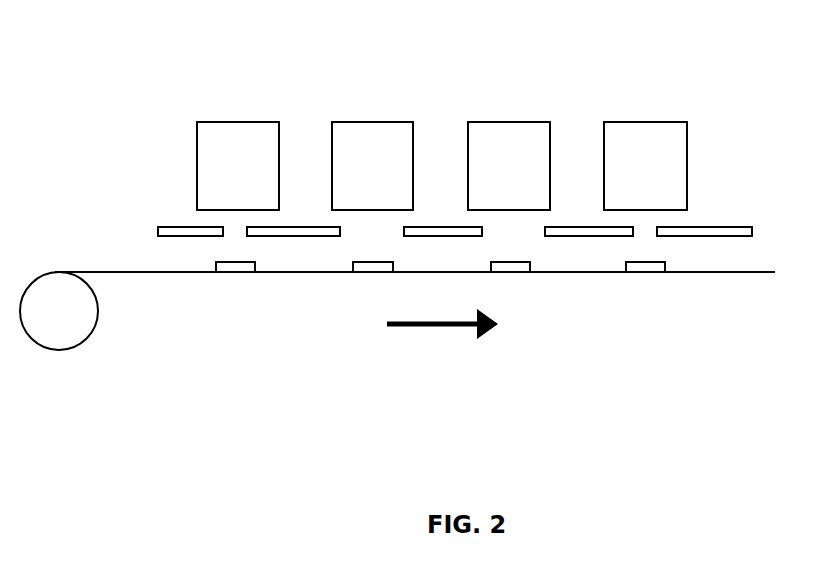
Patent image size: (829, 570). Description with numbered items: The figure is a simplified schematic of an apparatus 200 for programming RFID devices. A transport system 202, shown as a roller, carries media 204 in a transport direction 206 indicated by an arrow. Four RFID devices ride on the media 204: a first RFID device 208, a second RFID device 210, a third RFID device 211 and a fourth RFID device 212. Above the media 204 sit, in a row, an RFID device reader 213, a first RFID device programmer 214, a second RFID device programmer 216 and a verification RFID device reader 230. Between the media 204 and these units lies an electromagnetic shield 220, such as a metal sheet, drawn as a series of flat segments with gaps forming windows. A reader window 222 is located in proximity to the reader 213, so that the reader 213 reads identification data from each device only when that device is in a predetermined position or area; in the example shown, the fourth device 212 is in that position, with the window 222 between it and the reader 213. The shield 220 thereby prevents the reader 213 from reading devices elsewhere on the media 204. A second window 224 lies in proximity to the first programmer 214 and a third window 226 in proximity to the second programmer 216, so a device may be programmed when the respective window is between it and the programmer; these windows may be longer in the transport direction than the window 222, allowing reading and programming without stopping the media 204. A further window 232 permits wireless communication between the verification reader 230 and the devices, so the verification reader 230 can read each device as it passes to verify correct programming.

The apparatus 200 is at (480, 475).
The transport system 202 is at (88, 338).
The media 204 is at (731, 272).
The transport direction 206 is at (455, 328).
The first RFID device 208 is at (645, 272).
The second RFID device 210 is at (518, 272).
The third RFID device 211 is at (367, 272).
The fourth RFID device 212 is at (240, 272).
The RFID device reader 213 is at (197, 152).
The first RFID device programmer 214 is at (513, 122).
The second RFID device programmer 216 is at (372, 122).
The electromagnetic shield 220 is at (158, 231).
The reader window 222 is at (235, 234).
The second window 224 is at (526, 229).
The third window 226 is at (382, 229).
The verification RFID device reader 230 is at (648, 122).
The further window 232 is at (648, 227).